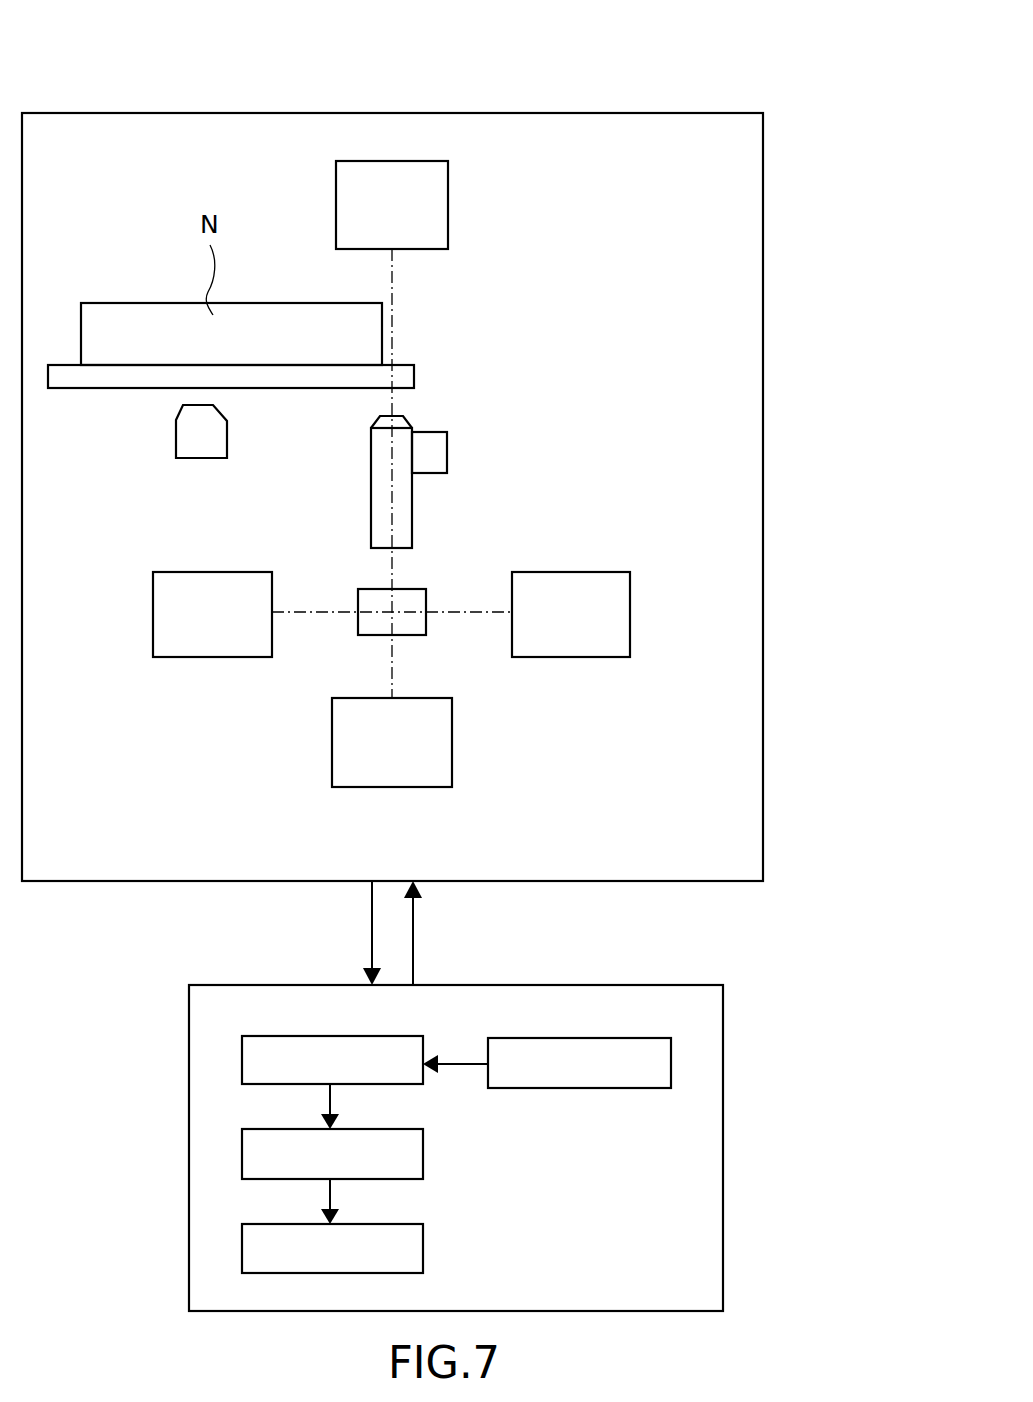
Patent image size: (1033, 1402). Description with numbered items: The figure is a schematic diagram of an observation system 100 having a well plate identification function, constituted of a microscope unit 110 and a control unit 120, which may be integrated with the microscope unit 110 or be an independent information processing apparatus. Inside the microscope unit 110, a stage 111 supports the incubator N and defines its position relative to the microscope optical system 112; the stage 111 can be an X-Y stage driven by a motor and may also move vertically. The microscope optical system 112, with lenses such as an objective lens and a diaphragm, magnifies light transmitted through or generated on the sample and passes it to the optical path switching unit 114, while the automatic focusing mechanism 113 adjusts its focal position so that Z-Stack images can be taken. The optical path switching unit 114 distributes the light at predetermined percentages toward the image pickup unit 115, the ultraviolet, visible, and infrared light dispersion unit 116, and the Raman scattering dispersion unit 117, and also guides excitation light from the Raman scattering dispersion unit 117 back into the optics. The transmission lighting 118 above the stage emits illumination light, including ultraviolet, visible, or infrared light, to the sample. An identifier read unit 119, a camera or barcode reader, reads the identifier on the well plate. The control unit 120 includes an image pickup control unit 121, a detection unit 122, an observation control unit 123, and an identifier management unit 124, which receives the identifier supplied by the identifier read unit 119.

The observation system 100 is at (790, 85).
The microscope unit 110 is at (763, 200).
The stage 111 is at (407, 378).
The microscope optical system 112 is at (377, 450).
The automatic focusing mechanism 113 is at (480, 452).
The optical path switching unit 114 is at (410, 597).
The image pickup unit 115 is at (433, 735).
The ultraviolet, visible, and infrared light dispersion unit 116 is at (583, 647).
The Raman scattering dispersion unit 117 is at (208, 647).
The transmission lighting 118 is at (437, 194).
The identifier read unit 119 is at (188, 437).
The control unit 120 is at (723, 1150).
The image pickup control unit 121 is at (242, 1063).
The detection unit 122 is at (242, 1153).
The observation control unit 123 is at (242, 1242).
The identifier management unit 124 is at (671, 1060).